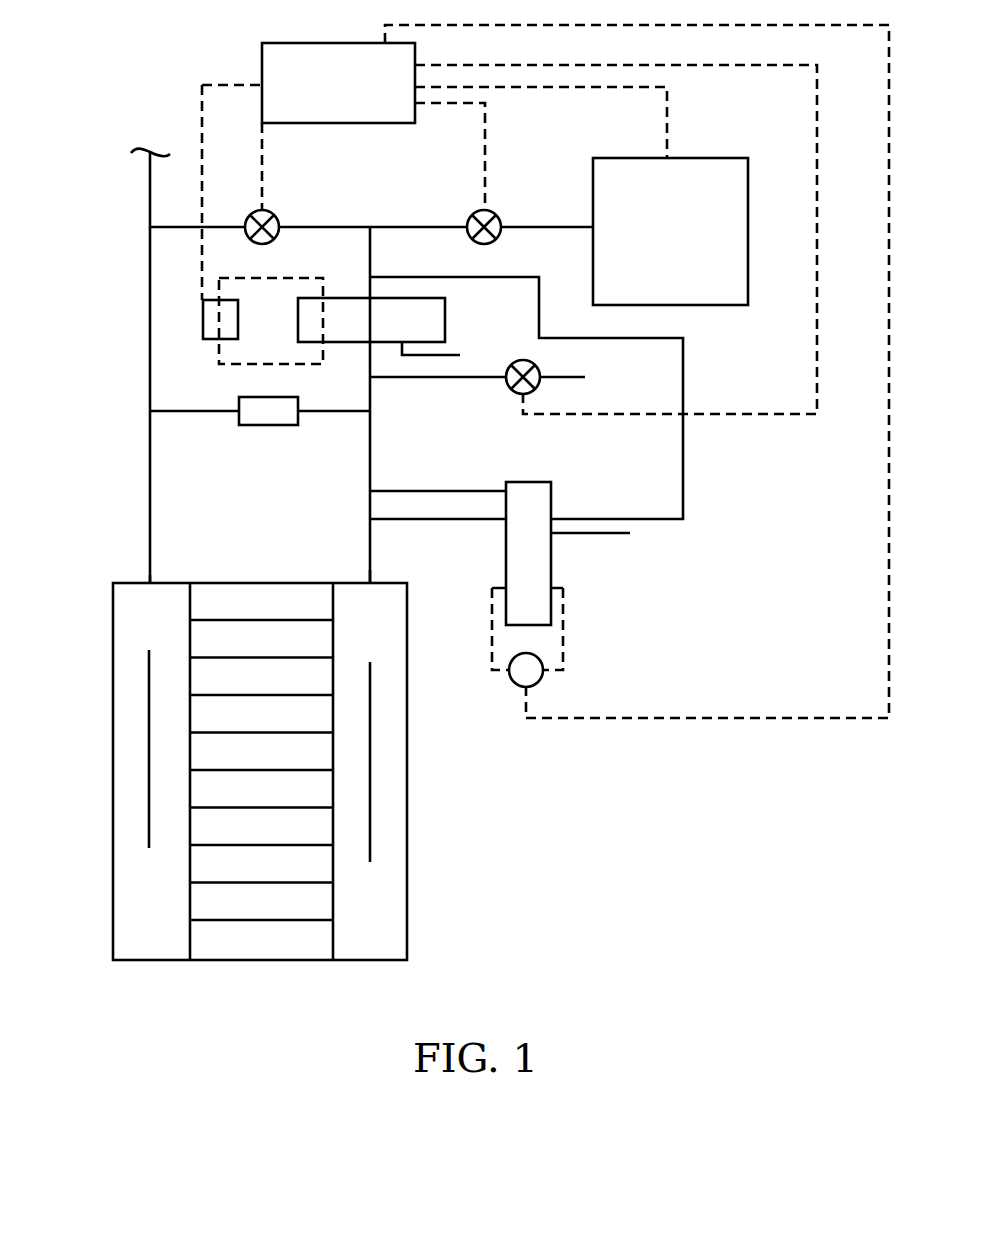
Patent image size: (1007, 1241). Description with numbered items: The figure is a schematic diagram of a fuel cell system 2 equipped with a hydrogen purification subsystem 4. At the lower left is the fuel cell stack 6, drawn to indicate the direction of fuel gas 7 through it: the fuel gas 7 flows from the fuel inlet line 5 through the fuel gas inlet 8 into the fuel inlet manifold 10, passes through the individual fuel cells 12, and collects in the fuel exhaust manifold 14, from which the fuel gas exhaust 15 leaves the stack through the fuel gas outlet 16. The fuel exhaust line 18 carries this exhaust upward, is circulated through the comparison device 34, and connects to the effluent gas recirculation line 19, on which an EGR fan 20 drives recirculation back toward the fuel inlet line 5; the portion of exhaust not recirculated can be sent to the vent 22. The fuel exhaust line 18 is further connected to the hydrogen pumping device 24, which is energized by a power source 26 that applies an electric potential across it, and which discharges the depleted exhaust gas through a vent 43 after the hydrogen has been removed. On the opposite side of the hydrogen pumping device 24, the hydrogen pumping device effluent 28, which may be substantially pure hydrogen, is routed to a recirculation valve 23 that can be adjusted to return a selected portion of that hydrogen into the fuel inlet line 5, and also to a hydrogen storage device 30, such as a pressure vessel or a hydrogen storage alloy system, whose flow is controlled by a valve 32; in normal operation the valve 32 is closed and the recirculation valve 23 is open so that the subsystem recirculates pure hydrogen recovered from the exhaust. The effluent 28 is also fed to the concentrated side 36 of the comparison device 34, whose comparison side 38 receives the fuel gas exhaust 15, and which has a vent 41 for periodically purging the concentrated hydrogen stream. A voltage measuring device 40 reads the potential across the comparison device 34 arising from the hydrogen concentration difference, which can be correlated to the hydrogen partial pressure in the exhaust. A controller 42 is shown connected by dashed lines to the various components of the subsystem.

The fuel cell system 2 is at (637, 451).
The hydrogen purification subsystem 4 is at (91, 263).
The fuel inlet line 5 is at (150, 497).
The fuel cell stack 6 is at (100, 824).
The fuel gas 7 is at (150, 190).
The fuel gas inlet 8 is at (152, 583).
The fuel inlet manifold 10 is at (134, 626).
The fuel cells 12 is at (190, 938).
The fuel exhaust manifold 14 is at (393, 932).
The fuel gas exhaust 15 is at (372, 752).
The fuel gas outlet 16 is at (370, 583).
The fuel exhaust line 18 is at (371, 582).
The effluent gas recirculation line 19 is at (315, 411).
The EGR fan 20 is at (258, 425).
The vent 22 is at (536, 366).
The recirculation valve 23 is at (275, 216).
The hydrogen pumping device 24 is at (371, 320).
The power source 26 is at (220, 319).
The hydrogen pumping device effluent 28 is at (368, 284).
The hydrogen storage device 30 is at (670, 231).
The valve 32 is at (497, 216).
The comparison device 34 is at (566, 558).
The concentrated side 36 is at (553, 506).
The comparison side 38 is at (505, 527).
The voltage measuring device 40 is at (540, 682).
The vent 41 is at (605, 534).
The controller 42 is at (509, 228).
The vent 43 is at (460, 355).